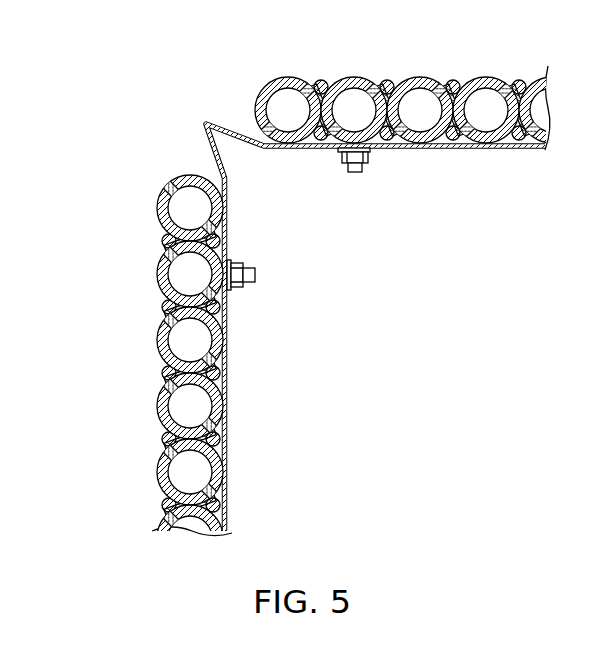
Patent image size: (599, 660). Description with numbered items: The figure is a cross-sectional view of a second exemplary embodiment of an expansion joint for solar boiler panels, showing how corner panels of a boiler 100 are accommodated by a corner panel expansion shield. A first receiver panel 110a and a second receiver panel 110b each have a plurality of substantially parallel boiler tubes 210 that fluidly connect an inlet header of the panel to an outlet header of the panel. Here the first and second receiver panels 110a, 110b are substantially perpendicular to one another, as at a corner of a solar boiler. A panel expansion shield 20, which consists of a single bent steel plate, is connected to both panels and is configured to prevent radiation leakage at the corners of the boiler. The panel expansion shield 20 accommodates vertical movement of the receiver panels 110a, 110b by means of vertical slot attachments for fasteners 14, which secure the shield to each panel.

The boiler 100 is at (110, 537).
The first receiver panel 110a is at (152, 488).
The second receiver panel 110b is at (506, 76).
The boiler tubes 210 is at (287, 78).
The panel expansion shield 20 is at (212, 117).
The fasteners 14 is at (368, 162).